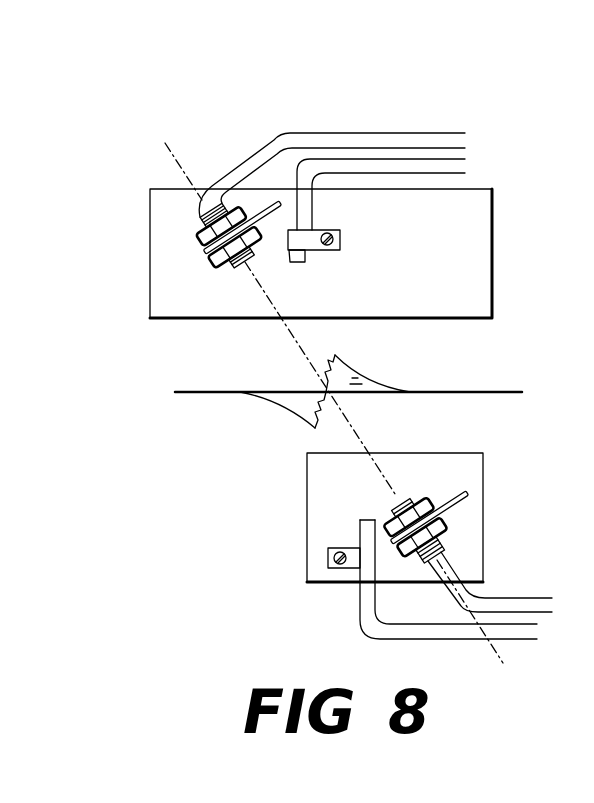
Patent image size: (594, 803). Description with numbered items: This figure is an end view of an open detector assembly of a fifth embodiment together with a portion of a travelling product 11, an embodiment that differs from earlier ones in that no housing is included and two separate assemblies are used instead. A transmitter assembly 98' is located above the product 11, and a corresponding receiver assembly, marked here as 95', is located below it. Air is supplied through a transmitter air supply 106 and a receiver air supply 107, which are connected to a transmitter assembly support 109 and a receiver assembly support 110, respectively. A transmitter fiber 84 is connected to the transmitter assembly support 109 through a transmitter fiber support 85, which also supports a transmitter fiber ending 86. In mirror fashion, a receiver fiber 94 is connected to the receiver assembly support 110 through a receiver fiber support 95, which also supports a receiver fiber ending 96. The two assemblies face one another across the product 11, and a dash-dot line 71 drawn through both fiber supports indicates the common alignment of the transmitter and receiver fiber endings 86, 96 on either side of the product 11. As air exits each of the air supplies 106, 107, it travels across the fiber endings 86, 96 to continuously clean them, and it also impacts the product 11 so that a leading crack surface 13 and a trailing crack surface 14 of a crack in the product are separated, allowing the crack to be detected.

The transmitter assembly 98' is at (315, 363).
The transmitter fiber 84 is at (385, 135).
The transmitter air supply 106 is at (382, 170).
The transmitter assembly support 109 is at (483, 281).
The transmitter fiber support 85 is at (205, 253).
The transmitter fiber ending 86 is at (202, 267).
The connection axis 71 is at (293, 343).
The travelling product 11 is at (470, 392).
The leading crack surface 13 is at (350, 362).
The trailing crack surface 14 is at (288, 415).
The receiver assembly support 110 is at (475, 470).
The receiver fiber ending 96 is at (406, 497).
The receiver fiber support 95 is at (466, 520).
The receiver fiber 94 is at (512, 600).
The receiver air supply 107 is at (415, 637).
The axis of second mounting assembly 95' is at (202, 601).